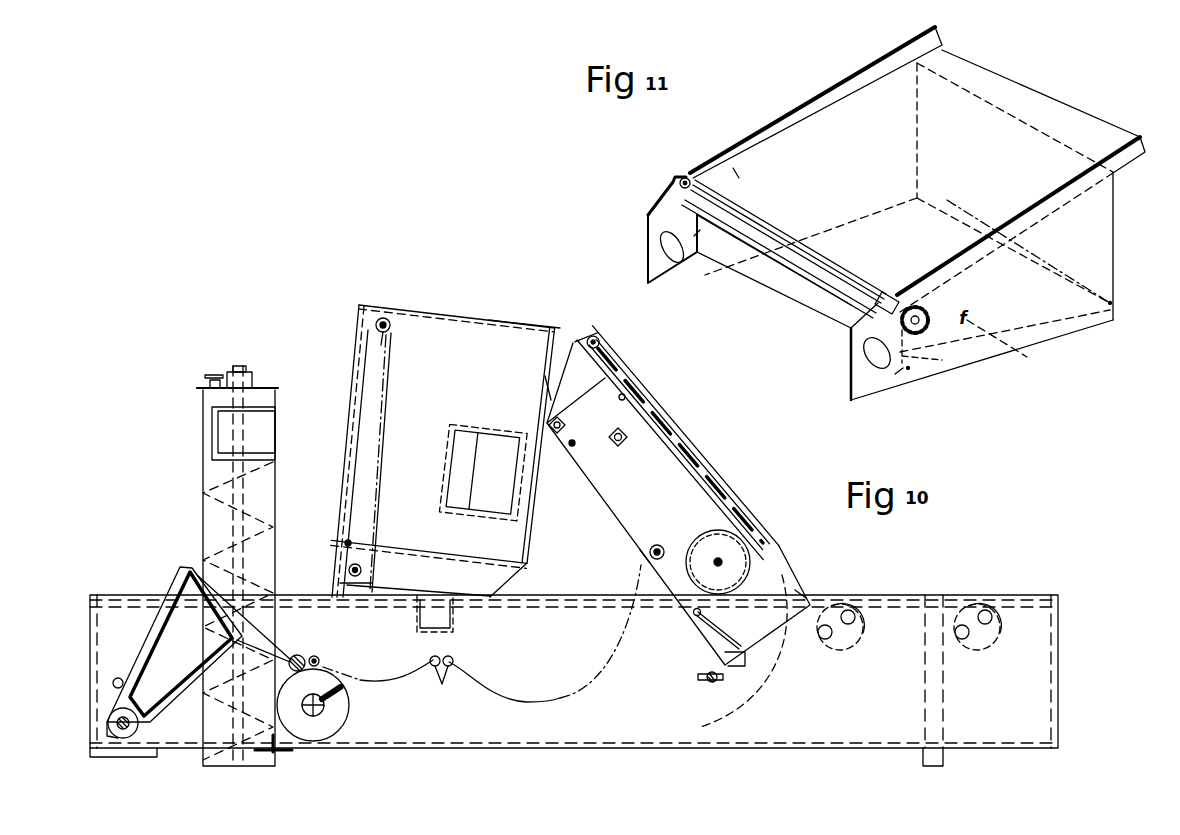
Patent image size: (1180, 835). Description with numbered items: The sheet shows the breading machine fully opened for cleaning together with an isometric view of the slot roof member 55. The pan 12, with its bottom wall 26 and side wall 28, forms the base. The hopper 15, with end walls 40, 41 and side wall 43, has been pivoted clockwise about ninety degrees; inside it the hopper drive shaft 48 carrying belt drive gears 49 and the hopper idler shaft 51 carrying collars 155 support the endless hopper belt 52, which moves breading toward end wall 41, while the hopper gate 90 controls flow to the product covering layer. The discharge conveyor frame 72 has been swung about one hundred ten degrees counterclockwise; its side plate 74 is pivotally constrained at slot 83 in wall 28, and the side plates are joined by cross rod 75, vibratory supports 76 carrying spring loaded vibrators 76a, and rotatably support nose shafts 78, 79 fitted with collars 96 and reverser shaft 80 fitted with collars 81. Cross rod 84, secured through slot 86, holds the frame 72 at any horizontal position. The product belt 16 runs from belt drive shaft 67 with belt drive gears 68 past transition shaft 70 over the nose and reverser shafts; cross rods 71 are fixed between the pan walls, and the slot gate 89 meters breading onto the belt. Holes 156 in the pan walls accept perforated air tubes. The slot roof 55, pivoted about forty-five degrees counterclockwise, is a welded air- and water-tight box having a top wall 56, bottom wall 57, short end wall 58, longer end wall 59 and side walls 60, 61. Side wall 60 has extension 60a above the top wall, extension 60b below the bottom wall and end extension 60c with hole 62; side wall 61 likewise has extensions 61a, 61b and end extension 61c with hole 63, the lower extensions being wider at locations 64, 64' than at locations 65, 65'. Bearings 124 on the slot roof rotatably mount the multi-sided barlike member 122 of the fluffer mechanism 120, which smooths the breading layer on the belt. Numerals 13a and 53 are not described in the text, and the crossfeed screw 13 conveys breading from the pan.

In FIG. 10, the pan 12 is at (803, 749).
In FIG. 10, the crossfeed screw 13 is at (340, 690).
In FIG. 10, the hub 13a is at (325, 710).
In FIG. 10, the hopper 15 is at (430, 313).
In FIG. 10, the product belt 16 is at (612, 656).
In FIG. 10, the bottom wall 26 is at (846, 750).
In FIG. 10, the side wall 28 is at (905, 733).
In FIG. 10, the end wall 40 is at (488, 318).
In FIG. 10, the end wall 41 is at (520, 560).
In FIG. 10, the side wall 43 is at (540, 383).
In FIG. 10, the hopper drive shaft 48 is at (349, 570).
In FIG. 10, the belt drive gears 49 is at (340, 583).
In FIG. 10, the hopper idler shaft 51 is at (385, 320).
In FIG. 10, the hopper belt 52 is at (398, 370).
In FIG. 10, the window 53 is at (522, 497).
In FIG. 11, the slot roof member 55 is at (1082, 327).
In FIG. 10, the slot roof member 55 is at (178, 574).
In FIG. 11, the top wall 56 is at (1024, 96).
In FIG. 11, the bottom wall 57 is at (1010, 345).
In FIG. 11, the short end wall 58 is at (793, 290).
In FIG. 11, the longer end wall 59 is at (1108, 245).
In FIG. 11, the side wall 60 is at (904, 370).
In FIG. 11, the extension 60a is at (980, 236).
In FIG. 11, the extension 60b is at (1052, 333).
In FIG. 11, the end extension 60c is at (851, 328).
In FIG. 11, the side wall 61 is at (684, 178).
In FIG. 11, the extension 61a is at (868, 68).
In FIG. 11, the extension 61b is at (822, 236).
In FIG. 11, the end extension 61c is at (672, 200).
In FIG. 11, the hole 62 is at (878, 378).
In FIG. 11, the hole 63 is at (675, 262).
In FIG. 11, the location 64 is at (933, 387).
In FIG. 11, the location 64' is at (709, 268).
In FIG. 11, the location 65 is at (1024, 242).
In FIG. 11, the location 65' is at (1015, 130).
In FIG. 10, the belt drive shaft 67 is at (110, 722).
In FIG. 10, the belt drive gears 68 is at (106, 732).
In FIG. 10, the transition shaft 70 is at (295, 656).
In FIG. 10, the cross rods 71 is at (316, 658).
In FIG. 10, the discharge conveyor frame 72 is at (783, 570).
In FIG. 10, the side plate 74 is at (795, 590).
In FIG. 10, the cross rod 75 is at (573, 446).
In FIG. 10, the vibratory supports 76 is at (653, 431).
In FIG. 10, the spring loaded vibrators 76a is at (622, 399).
In FIG. 10, the nose shaft 78 is at (645, 556).
In FIG. 10, the nose shaft 79 is at (590, 338).
In FIG. 10, the reverser shaft 80 is at (722, 558).
In FIG. 10, the collars 81 is at (735, 552).
In FIG. 10, the slot 83 is at (746, 660).
In FIG. 10, the cross rod 84 is at (705, 680).
In FIG. 10, the slot 86 is at (714, 680).
In FIG. 10, the slot gate 89 is at (285, 745).
In FIG. 10, the hopper gate 90 is at (343, 543).
In FIG. 10, the collars 96 is at (596, 340).
In FIG. 11, the fluffer mechanism 120 is at (770, 216).
In FIG. 11, the barlike member 122 is at (757, 205).
In FIG. 10, the barlike member 122 is at (118, 677).
In FIG. 11, the bearings 124 is at (688, 176).
In FIG. 10, the collars 155 is at (388, 318).
In FIG. 10, the holes 156 is at (862, 620).